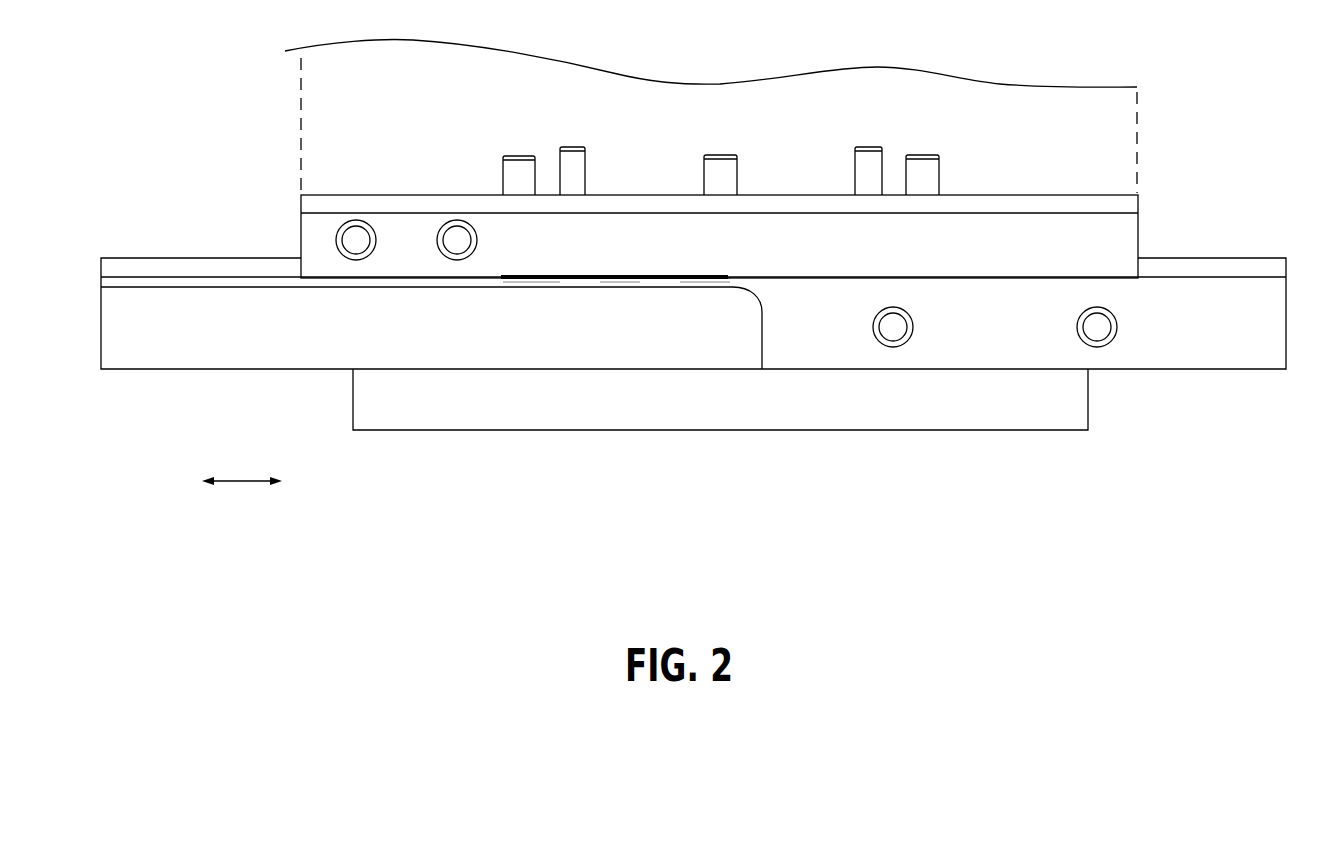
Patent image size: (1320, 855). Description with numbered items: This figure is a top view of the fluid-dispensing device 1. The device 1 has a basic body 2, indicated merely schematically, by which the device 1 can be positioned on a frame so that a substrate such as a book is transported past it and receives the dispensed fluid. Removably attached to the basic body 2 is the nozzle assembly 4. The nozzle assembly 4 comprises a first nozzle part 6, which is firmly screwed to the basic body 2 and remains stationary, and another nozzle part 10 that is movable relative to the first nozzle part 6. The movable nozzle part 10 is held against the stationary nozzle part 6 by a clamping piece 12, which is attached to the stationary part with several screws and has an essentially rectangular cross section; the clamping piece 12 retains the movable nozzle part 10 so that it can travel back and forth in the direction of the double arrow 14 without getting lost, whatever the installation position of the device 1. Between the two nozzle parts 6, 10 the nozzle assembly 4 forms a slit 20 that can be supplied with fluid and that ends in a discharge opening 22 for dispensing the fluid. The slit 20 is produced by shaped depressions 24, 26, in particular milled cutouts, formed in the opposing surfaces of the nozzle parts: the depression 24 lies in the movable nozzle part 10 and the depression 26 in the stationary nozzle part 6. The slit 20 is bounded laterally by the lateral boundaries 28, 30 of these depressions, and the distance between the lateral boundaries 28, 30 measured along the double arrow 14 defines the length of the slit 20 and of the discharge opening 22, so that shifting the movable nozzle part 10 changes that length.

The device 1 is at (699, 388).
The basic body 2 is at (322, 80).
The nozzle assembly 4 is at (699, 401).
The first nozzle part 6 is at (1130, 229).
The movable nozzle part 10 is at (1228, 352).
The clamping piece 12 is at (967, 418).
The double arrow 14 is at (229, 482).
The slit 20 is at (543, 281).
The discharge opening 22 is at (622, 283).
The depression 24 is at (697, 281).
The depression 26 is at (640, 277).
The lateral boundary 28 is at (504, 277).
The lateral boundary 30 is at (728, 277).